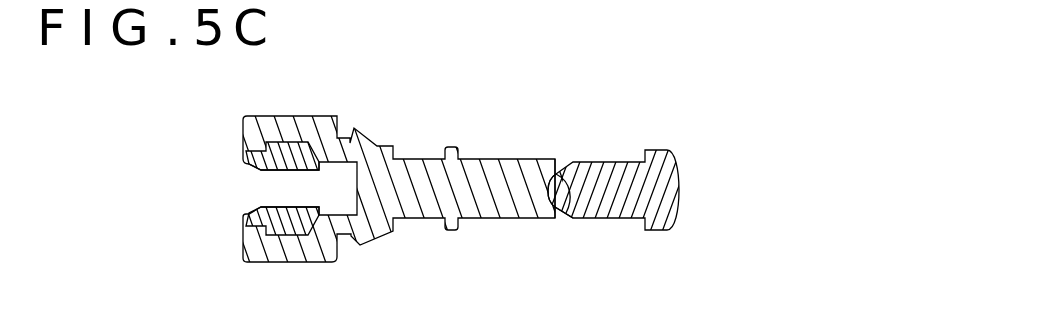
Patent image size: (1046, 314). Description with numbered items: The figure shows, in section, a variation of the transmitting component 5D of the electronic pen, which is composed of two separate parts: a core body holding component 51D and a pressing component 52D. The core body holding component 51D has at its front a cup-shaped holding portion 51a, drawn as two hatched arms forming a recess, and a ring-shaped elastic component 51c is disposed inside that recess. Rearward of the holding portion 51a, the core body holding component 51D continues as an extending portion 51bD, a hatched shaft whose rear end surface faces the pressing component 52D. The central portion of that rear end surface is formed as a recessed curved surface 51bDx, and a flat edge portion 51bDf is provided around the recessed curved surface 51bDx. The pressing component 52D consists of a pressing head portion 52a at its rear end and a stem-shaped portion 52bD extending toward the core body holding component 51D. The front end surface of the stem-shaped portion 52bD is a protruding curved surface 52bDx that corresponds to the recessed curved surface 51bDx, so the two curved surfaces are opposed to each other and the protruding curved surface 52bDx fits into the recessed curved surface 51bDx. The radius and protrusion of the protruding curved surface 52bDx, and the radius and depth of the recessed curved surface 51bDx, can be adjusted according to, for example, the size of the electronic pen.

The transmitting component 5D is at (466, 97).
The core body holding component 51D is at (415, 218).
The holding portion 51a is at (272, 127).
The ring-shaped elastic component 51c is at (293, 152).
The extending portion 51bD is at (482, 172).
The flat edge portion 51bDf is at (553, 176).
The recessed curved surface 51bDx is at (548, 191).
The pressing component 52D is at (600, 218).
The stem-shaped portion 52bD is at (598, 170).
The pressing head portion 52a is at (665, 188).
The protruding curved surface 52bDx is at (575, 222).